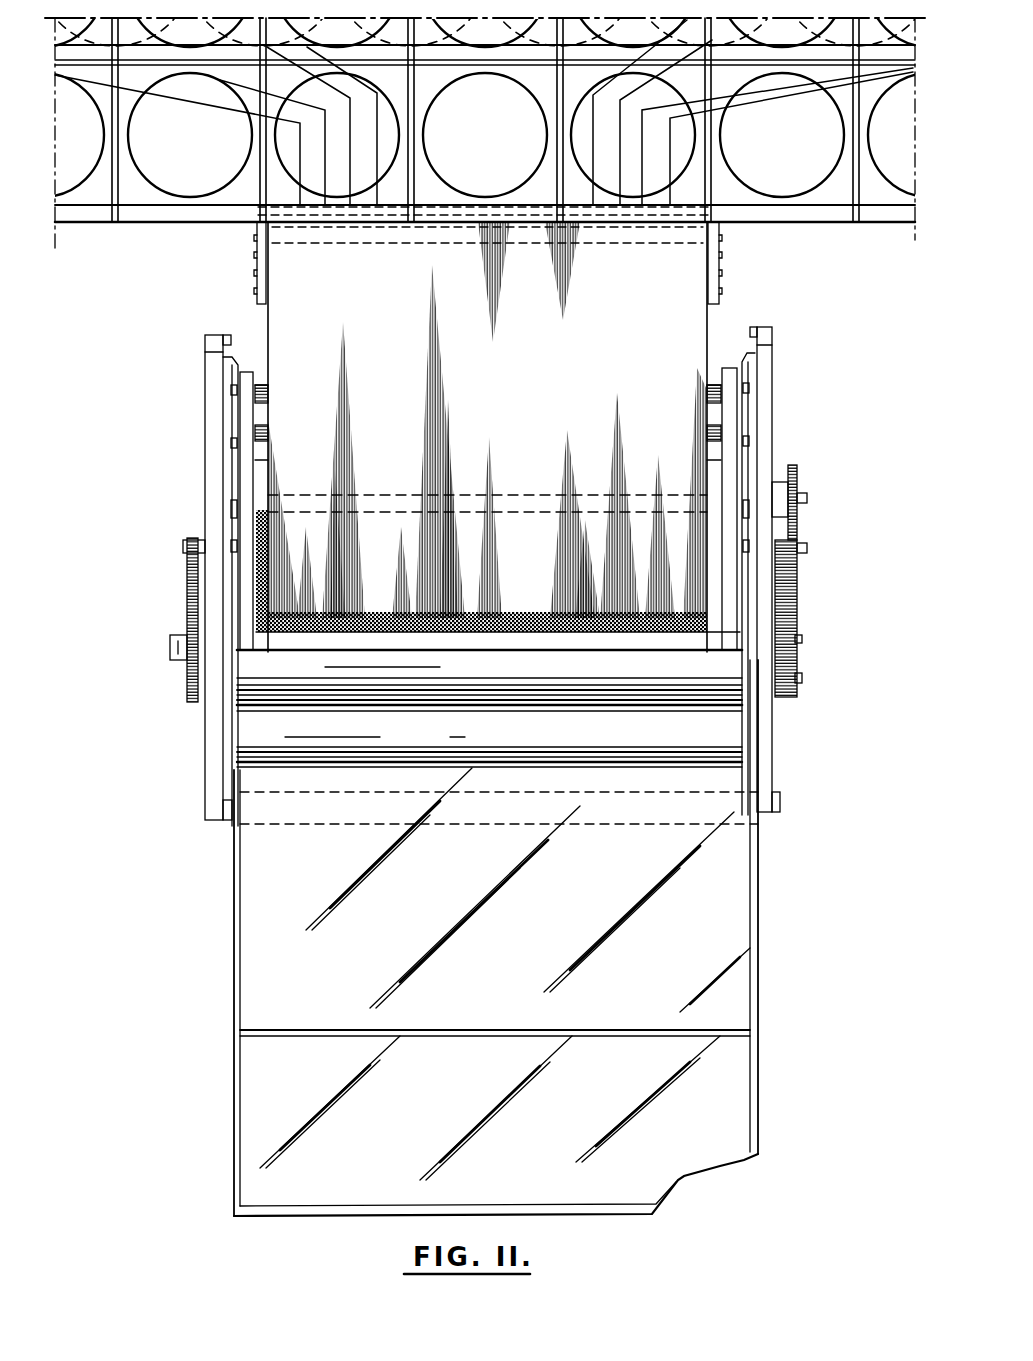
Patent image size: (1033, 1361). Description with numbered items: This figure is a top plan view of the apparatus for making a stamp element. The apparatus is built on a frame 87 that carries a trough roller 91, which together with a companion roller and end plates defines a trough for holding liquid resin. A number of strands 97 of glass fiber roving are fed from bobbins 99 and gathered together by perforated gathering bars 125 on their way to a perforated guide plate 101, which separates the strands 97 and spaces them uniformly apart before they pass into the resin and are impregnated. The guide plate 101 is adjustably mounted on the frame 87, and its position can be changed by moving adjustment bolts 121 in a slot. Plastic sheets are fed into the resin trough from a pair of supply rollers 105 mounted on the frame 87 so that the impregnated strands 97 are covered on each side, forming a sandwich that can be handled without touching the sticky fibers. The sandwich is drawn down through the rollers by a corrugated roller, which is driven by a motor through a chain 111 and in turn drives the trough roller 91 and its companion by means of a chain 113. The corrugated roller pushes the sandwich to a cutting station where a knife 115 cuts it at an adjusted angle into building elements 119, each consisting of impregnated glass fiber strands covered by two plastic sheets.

The frame 87 is at (214, 432).
The trough roller 91 is at (530, 686).
The strands 97 is at (512, 398).
The bobbins 99 is at (483, 114).
The guide plate 101 is at (497, 615).
The supply rollers 105 is at (709, 406).
The chain 111 is at (188, 597).
The chain 113 is at (791, 516).
The knife 115 is at (603, 1030).
The building elements 119 is at (534, 1146).
The adjustment bolts 121 is at (232, 392).
The gathering bars 125 is at (553, 202).